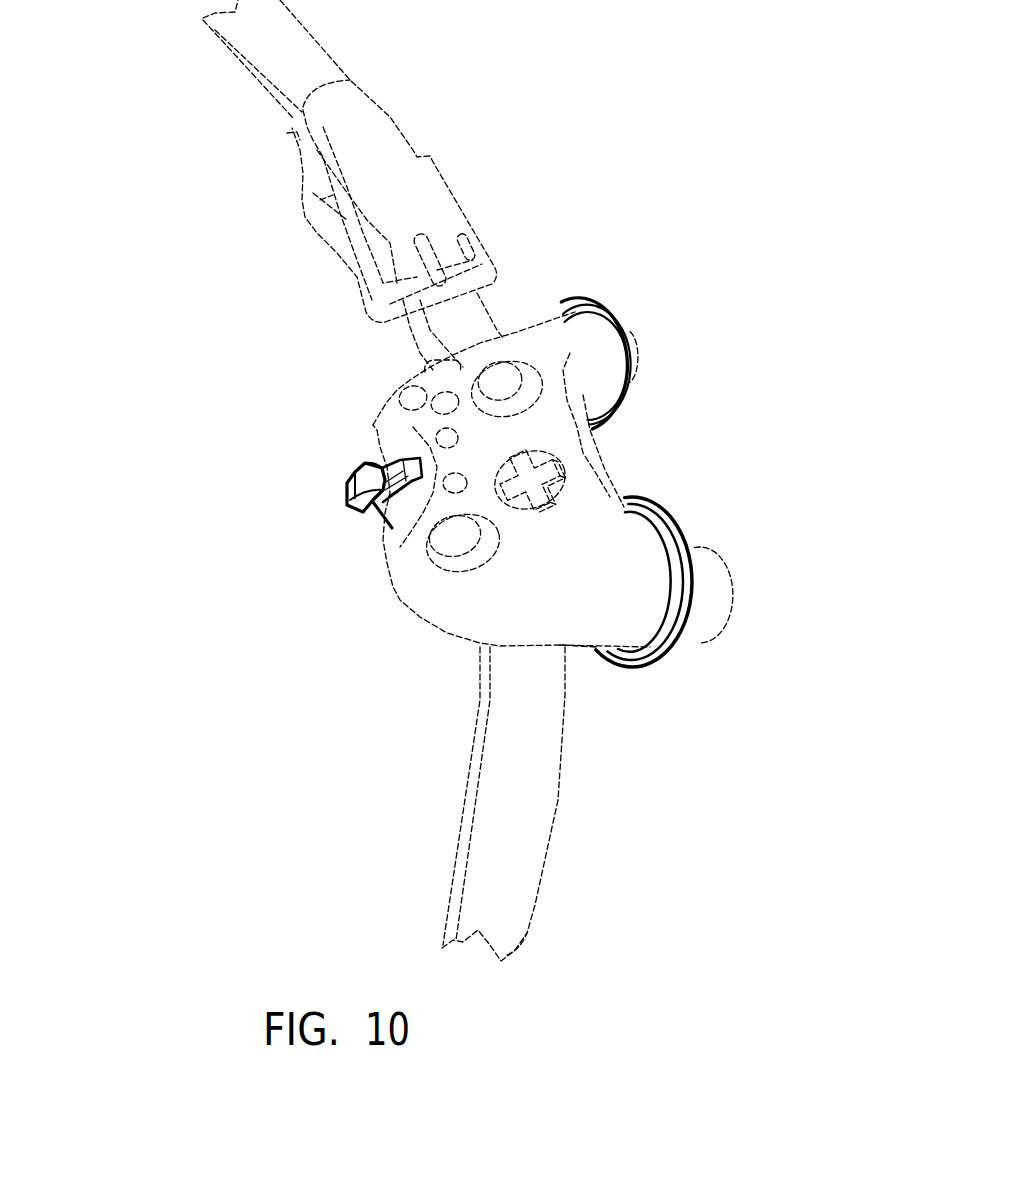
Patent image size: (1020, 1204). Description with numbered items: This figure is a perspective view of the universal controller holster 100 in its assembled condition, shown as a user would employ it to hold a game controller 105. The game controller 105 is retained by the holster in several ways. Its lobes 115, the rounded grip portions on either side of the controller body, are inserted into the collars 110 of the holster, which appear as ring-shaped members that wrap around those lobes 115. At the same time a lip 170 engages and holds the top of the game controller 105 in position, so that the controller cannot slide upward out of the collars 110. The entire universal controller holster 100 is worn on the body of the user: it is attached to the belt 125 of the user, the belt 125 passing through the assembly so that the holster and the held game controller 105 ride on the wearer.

The universal controller holster 100 is at (254, 542).
The game controller 105 is at (393, 418).
The collars 110 is at (607, 303).
The lobes 115 is at (707, 558).
The belt 125 is at (508, 715).
The lip 170 is at (373, 502).